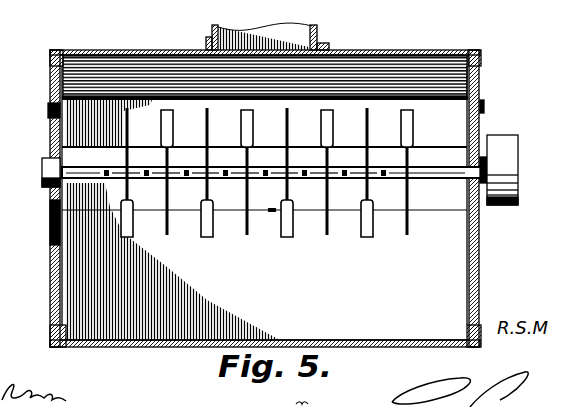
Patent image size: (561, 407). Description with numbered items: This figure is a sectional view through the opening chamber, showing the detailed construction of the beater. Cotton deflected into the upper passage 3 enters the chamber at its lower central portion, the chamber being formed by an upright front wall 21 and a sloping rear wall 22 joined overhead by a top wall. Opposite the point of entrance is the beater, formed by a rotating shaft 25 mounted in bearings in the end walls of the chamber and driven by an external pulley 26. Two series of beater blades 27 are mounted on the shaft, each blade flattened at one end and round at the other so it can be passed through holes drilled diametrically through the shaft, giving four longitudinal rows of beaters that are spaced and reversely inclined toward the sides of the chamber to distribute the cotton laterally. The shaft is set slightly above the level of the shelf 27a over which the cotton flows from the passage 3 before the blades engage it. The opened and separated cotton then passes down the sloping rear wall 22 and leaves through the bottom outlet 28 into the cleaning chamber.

The upper passage 3 is at (293, 33).
The upright front wall 21 is at (387, 48).
The shelf 27a is at (413, 72).
The rotating shaft 25 is at (443, 167).
The external pulley 26 is at (508, 140).
The beater blades 27 is at (125, 182).
The bottom outlet 28 is at (75, 192).
The sloping rear wall 22 is at (83, 283).